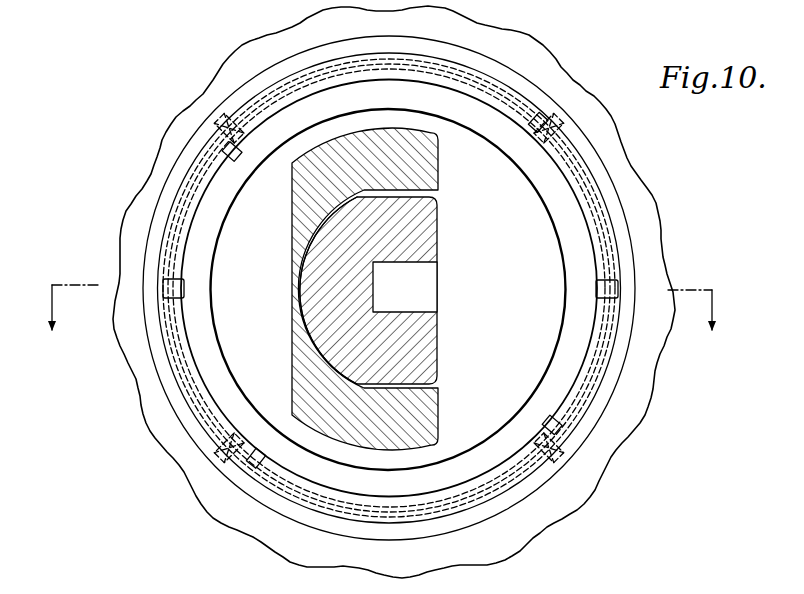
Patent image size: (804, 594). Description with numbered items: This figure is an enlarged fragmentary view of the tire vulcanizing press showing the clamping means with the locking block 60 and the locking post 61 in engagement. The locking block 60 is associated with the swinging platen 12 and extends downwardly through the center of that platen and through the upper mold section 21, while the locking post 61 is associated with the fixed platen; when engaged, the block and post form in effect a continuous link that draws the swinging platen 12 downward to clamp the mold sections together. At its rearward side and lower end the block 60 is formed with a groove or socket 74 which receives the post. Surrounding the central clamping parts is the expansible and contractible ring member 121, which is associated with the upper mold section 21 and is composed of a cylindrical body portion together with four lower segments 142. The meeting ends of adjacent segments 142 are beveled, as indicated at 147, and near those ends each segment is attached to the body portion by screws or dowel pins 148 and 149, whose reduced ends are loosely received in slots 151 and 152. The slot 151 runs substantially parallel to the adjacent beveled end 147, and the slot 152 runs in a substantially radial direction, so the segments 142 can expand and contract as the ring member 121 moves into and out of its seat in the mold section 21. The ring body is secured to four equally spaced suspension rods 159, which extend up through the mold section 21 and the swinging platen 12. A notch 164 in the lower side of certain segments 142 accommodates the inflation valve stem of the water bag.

The upper swinging mold section 21 is at (150, 415).
The expansible and contractible ring member 121 is at (175, 387).
The lower segments 142 is at (337, 80).
The notch 164 is at (173, 285).
The locking block 60 is at (300, 197).
The locking post 61 is at (420, 220).
The groove or socket 74 is at (300, 283).
The beveled ends of segments 147 is at (230, 152).
The suspension rods 159 is at (225, 125).
The screw or dowel pin 148 is at (250, 103).
The slot 151 is at (240, 127).
The slot 152 is at (220, 133).
The screw or dowel pin 149 is at (213, 138).
The swinging platen 12 is at (383, 308).